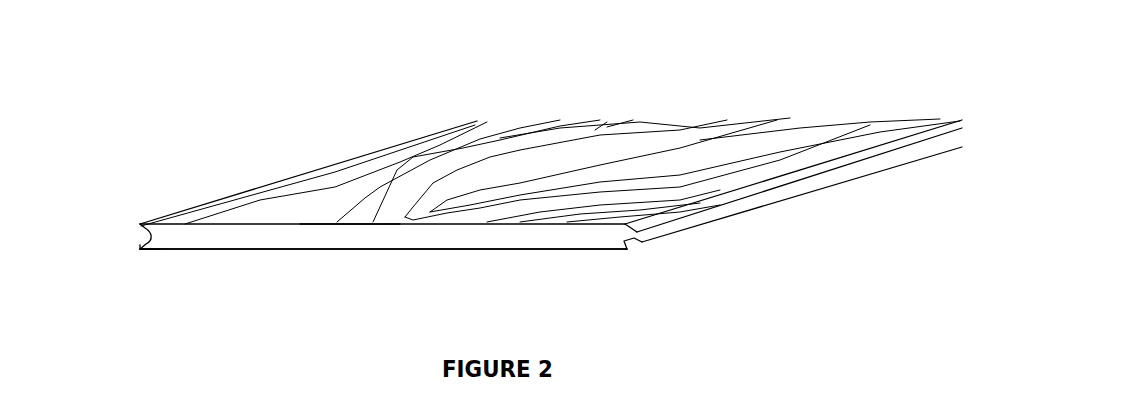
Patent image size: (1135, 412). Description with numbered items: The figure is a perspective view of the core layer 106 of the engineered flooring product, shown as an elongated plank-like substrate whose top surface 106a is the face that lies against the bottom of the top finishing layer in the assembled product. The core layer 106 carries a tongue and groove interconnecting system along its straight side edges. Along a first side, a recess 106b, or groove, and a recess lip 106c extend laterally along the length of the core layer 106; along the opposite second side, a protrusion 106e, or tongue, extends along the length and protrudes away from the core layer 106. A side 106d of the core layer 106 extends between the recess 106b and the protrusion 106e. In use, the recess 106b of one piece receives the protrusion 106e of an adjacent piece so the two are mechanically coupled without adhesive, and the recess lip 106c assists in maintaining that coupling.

The core layer 106 is at (502, 164).
The top surface 106a is at (617, 120).
The recess 106b is at (137, 232).
The recess lip 106c is at (140, 245).
The side 106d is at (340, 245).
The protrusion 106e is at (723, 212).